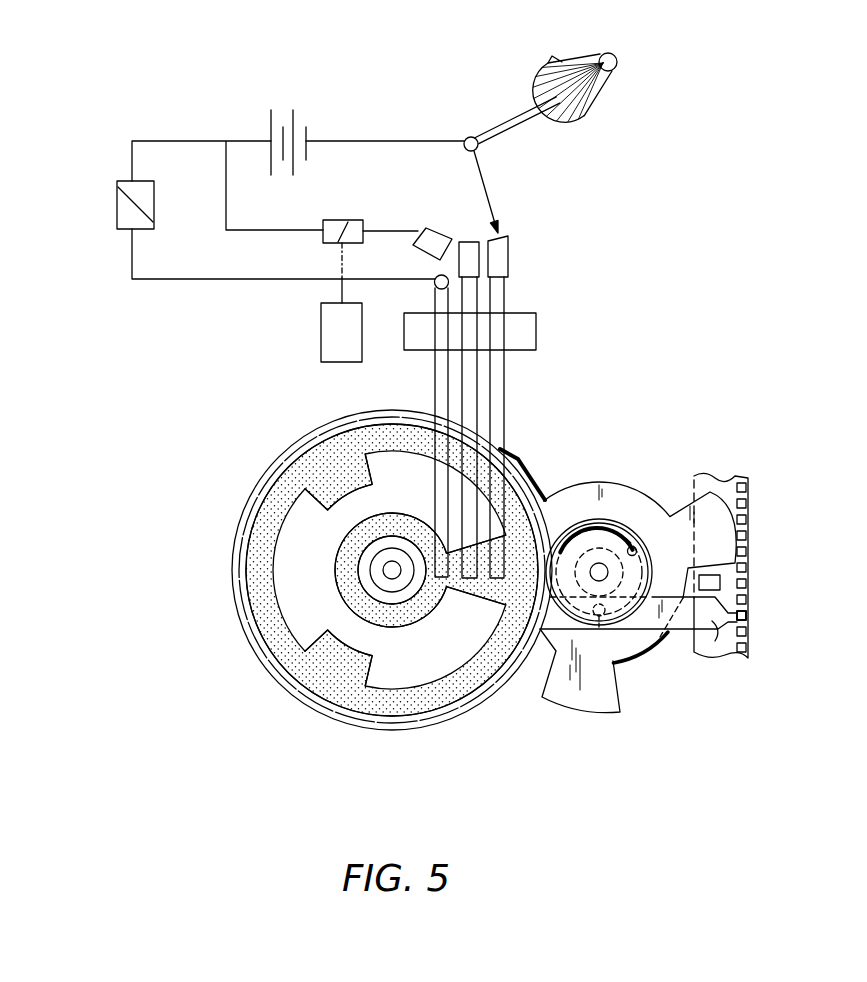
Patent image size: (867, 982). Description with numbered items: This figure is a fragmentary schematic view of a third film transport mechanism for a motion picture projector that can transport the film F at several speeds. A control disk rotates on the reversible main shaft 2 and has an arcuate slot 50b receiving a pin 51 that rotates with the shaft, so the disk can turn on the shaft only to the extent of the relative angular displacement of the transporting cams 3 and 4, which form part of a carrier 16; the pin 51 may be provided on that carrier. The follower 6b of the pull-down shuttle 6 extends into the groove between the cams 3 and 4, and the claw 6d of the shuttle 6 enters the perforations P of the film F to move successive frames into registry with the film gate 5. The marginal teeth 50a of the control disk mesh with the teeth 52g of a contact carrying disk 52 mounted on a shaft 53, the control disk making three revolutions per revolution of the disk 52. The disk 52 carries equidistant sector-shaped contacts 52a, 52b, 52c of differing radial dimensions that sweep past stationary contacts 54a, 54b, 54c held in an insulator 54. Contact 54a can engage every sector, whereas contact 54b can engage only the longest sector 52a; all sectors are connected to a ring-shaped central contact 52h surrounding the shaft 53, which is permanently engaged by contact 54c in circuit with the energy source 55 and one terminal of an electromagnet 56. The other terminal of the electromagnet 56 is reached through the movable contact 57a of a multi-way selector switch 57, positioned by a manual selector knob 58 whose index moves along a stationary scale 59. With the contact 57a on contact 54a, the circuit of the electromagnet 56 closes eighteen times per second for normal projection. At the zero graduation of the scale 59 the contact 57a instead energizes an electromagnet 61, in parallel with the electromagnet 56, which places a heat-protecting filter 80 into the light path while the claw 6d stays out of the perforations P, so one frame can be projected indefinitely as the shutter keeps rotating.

The main shaft 2 is at (597, 573).
The transporting cam 3 is at (556, 651).
The transporting cam 4 is at (643, 642).
The film gate 5 is at (713, 583).
The pull-down lever or shuttle 6 is at (716, 638).
The follower 6b is at (590, 630).
The claw 6d is at (741, 614).
The carrier 16 is at (569, 531).
The teeth 50a is at (614, 522).
The arcuate slot 50b is at (600, 535).
The pin 51 is at (637, 552).
The contact carrying disk 52 is at (460, 692).
The sector-shaped contact 52a is at (478, 584).
The sector-shaped contact 52b is at (333, 668).
The sector-shaped contact 52c is at (335, 462).
The teeth 52g is at (262, 490).
The ring-shaped central contact 52h is at (405, 611).
The shaft 53 is at (390, 572).
The insulator 54 is at (515, 325).
The fixed contact 54a is at (497, 421).
The fixed contact 54b is at (473, 380).
The fixed contact 54c is at (441, 383).
The energy source 55 is at (306, 90).
The electromagnet 56 is at (121, 205).
The multi-way selector switch 57 is at (506, 126).
The movable contact 57a is at (492, 197).
The selector knob 58 is at (598, 90).
The scale 59 is at (556, 55).
The electromagnet 61 is at (356, 205).
The heat-protecting filter 80 is at (326, 338).
The film F is at (746, 502).
The perforations P is at (750, 640).